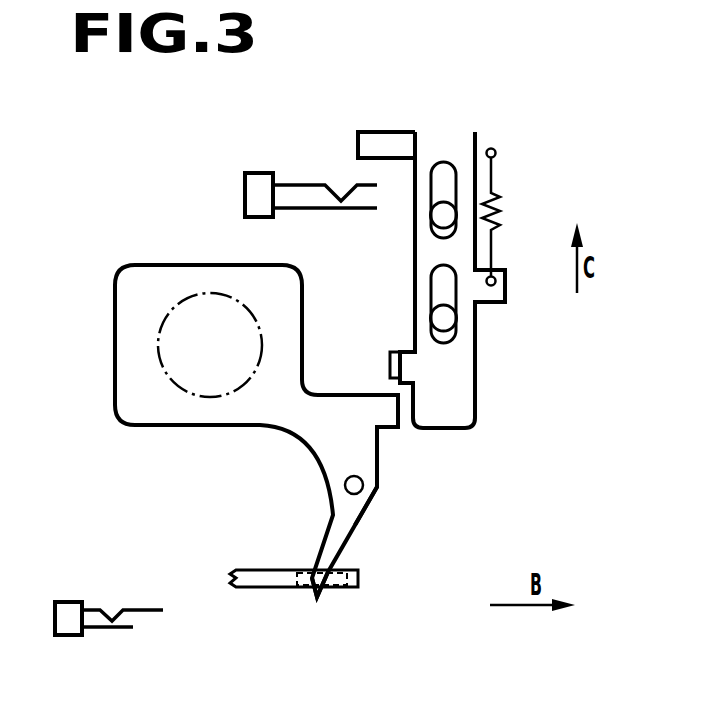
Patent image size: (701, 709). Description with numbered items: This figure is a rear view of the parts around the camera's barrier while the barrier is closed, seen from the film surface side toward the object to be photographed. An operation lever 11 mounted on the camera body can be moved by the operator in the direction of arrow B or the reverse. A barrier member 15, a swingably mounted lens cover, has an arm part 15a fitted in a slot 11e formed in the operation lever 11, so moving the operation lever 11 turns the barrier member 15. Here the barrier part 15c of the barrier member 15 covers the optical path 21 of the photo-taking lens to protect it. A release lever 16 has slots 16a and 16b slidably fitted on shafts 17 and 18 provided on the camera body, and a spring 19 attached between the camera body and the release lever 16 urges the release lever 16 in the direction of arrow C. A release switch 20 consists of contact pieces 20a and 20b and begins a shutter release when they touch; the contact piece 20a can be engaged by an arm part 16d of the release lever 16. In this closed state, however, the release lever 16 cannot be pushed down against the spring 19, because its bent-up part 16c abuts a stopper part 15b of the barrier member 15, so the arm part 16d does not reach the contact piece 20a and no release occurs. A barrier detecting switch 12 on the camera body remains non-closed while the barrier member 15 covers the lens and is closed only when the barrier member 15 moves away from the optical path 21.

The operation lever 11 is at (250, 578).
The slot 11e is at (340, 580).
The barrier detecting switch 12 is at (70, 615).
The barrier member 15 is at (148, 427).
The arm part 15a is at (308, 590).
The stopper part 15b is at (403, 413).
The barrier part 15c is at (225, 414).
The release lever 16 is at (445, 393).
The slot 16a is at (458, 183).
The slot 16b is at (475, 312).
The bent-up part 16c is at (387, 366).
The arm part 16d is at (378, 140).
The shaft 17 is at (440, 213).
The shaft 18 is at (438, 318).
The spring 19 is at (502, 212).
The release switch 20 is at (258, 192).
The contact piece 20a is at (300, 182).
The contact piece 20b is at (322, 212).
The optical path 21 is at (183, 300).